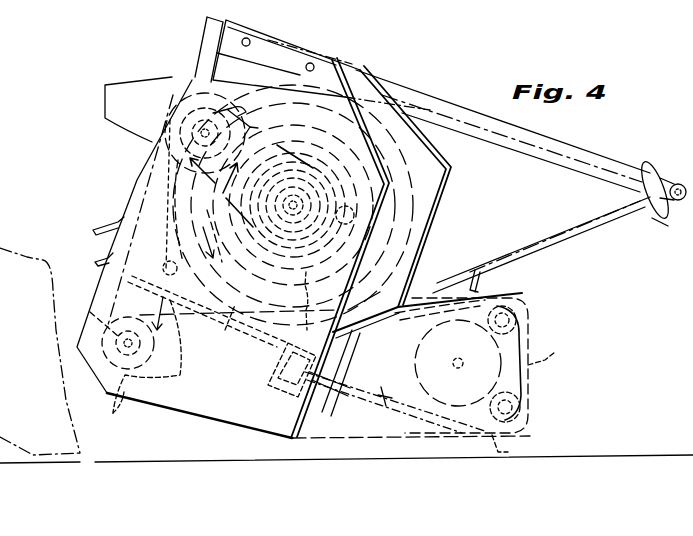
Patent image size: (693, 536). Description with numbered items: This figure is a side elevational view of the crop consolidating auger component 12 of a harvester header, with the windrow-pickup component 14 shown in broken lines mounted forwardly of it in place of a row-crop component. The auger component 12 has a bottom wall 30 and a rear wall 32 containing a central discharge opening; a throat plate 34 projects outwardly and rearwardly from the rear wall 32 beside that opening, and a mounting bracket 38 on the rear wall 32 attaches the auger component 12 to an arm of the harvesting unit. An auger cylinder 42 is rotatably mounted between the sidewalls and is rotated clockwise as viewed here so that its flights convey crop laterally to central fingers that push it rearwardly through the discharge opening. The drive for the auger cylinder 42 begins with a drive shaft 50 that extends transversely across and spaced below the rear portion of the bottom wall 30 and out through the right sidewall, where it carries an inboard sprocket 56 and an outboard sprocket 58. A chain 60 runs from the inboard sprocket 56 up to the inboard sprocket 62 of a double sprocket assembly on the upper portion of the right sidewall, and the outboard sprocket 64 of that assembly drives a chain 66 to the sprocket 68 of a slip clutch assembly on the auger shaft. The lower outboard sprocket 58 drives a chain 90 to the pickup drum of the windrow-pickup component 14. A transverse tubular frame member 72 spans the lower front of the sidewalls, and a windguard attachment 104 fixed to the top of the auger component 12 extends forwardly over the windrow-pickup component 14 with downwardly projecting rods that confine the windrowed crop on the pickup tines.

The crop consolidating auger component 12 is at (408, 65).
The windrow-pickup component 14 is at (545, 307).
The bottom wall 30 is at (240, 320).
The rear wall 32 is at (164, 270).
The throat plate 34 is at (106, 90).
The mounting bracket 38 is at (105, 232).
The auger cylinder 42 is at (268, 270).
The drive shaft 50 is at (90, 310).
The inboard sprocket 56 is at (182, 386).
The outboard sprocket 58 is at (114, 413).
The chain 60 is at (192, 255).
The inboard sprocket 62 is at (168, 118).
The outboard sprocket 64 is at (243, 120).
The chain 66 is at (284, 143).
The sprocket 68 is at (345, 210).
The transverse tubular frame member 72 is at (267, 387).
The chain 90 is at (318, 280).
The windguard attachment 104 is at (565, 145).